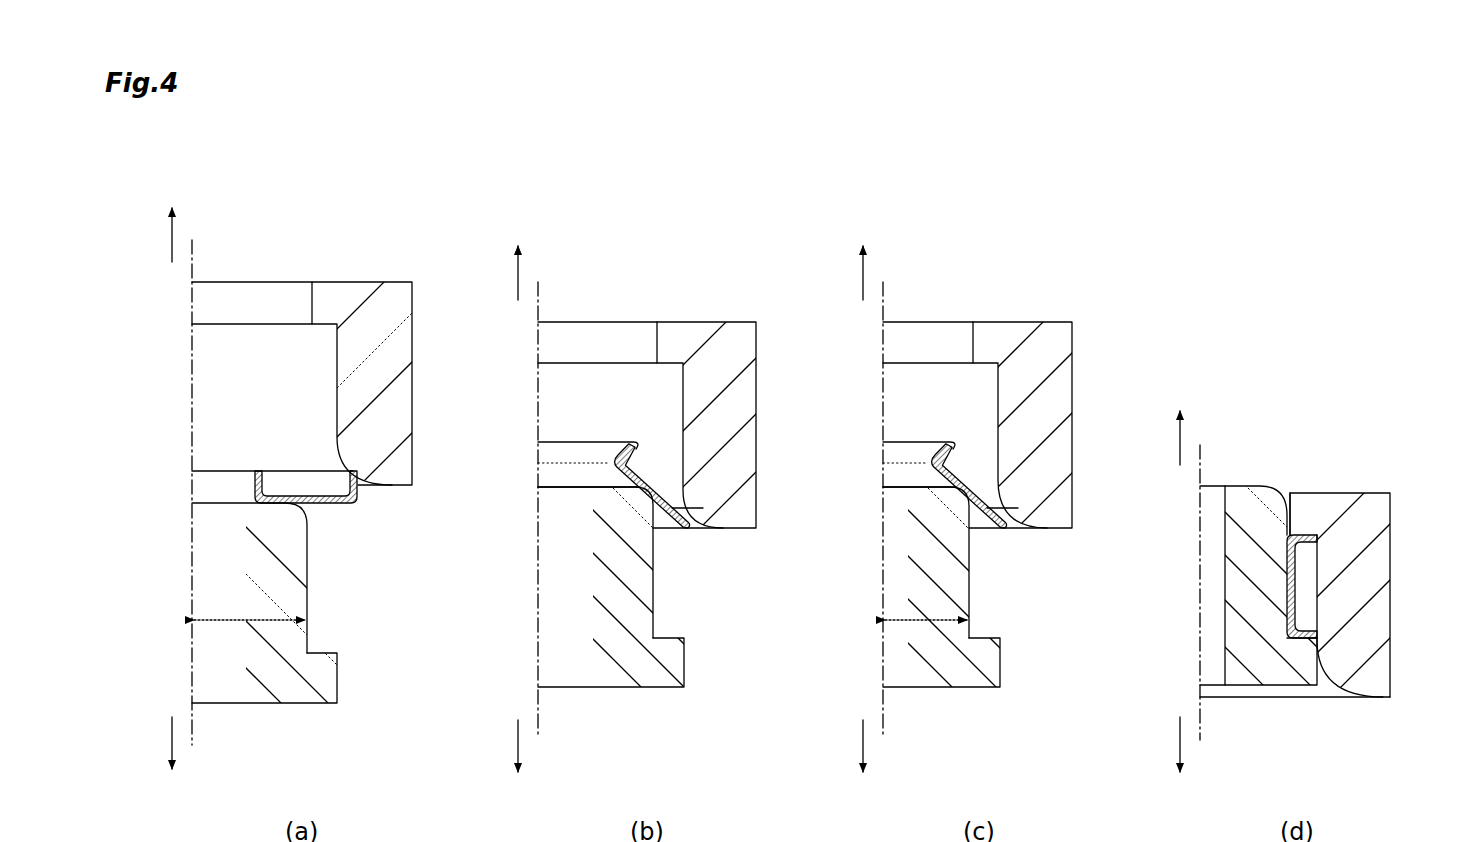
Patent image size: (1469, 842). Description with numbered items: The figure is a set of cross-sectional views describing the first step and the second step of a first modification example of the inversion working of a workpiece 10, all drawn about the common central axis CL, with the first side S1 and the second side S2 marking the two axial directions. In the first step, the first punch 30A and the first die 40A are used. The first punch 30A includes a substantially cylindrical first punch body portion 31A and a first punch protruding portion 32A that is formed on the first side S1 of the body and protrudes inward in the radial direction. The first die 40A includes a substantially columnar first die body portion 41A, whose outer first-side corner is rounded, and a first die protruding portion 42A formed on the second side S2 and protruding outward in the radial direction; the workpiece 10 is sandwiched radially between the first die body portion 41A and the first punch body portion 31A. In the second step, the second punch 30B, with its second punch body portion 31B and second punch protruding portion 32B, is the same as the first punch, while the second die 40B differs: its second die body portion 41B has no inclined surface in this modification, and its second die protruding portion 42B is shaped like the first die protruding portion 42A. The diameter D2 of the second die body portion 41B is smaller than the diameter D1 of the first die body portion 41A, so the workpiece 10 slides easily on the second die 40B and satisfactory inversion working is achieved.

The workpiece 10 is at (326, 506).
The first punch 30A is at (392, 282).
The first punch body portion 31A is at (386, 370).
The first punch protruding portion 32A is at (320, 301).
The first die 40A is at (279, 704).
The first die body portion 41A is at (272, 582).
The first die protruding portion 42A is at (325, 677).
The second punch 30B is at (1057, 322).
The second punch body portion 31B is at (1051, 410).
The second punch protruding portion 32B is at (984, 342).
The second die 40B is at (942, 690).
The second die body portion 41B is at (940, 570).
The second die protruding portion 42B is at (990, 662).
The diameter of first die body portion D1 is at (272, 618).
The diameter of second die body portion D2 is at (945, 612).
The first side S1 is at (170, 238).
The second side S2 is at (170, 735).
The central axis CL is at (196, 258).